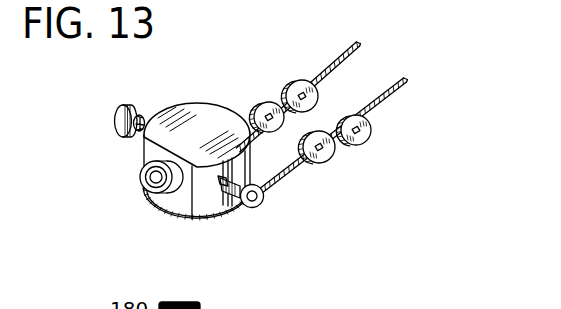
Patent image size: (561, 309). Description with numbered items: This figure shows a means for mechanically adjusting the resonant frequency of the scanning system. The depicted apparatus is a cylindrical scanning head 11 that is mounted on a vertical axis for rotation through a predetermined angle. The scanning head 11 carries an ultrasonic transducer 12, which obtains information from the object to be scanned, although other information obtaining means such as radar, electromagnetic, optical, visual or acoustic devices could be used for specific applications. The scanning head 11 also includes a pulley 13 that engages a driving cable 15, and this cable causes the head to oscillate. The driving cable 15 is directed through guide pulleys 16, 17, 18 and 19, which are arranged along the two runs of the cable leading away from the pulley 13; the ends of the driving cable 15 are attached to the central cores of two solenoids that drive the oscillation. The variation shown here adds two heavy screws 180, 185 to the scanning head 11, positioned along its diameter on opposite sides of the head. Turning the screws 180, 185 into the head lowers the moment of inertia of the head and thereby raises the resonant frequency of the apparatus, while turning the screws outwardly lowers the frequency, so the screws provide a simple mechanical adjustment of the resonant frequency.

The scanning head 11 is at (215, 132).
The ultrasonic transducer 12 is at (140, 177).
The pulley 13 is at (198, 219).
The driving cable 15 is at (355, 43).
The guide pulley 16 is at (361, 139).
The guide pulley 17 is at (323, 165).
The guide pulley 18 is at (290, 84).
The guide pulley 19 is at (260, 104).
The heavy screw 180 is at (114, 121).
The heavy screw 185 is at (256, 208).